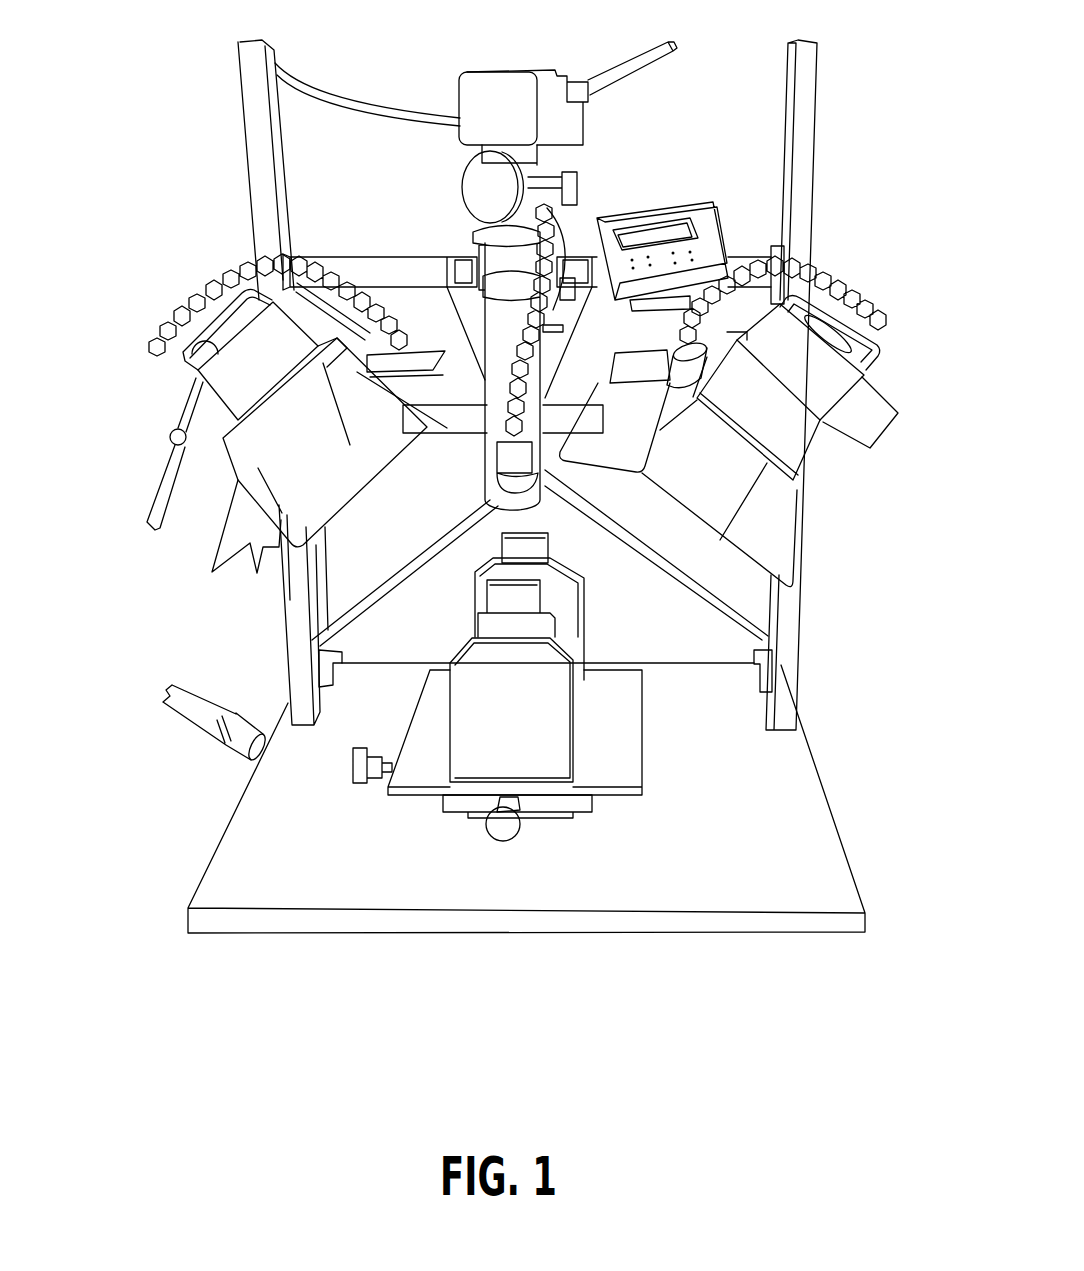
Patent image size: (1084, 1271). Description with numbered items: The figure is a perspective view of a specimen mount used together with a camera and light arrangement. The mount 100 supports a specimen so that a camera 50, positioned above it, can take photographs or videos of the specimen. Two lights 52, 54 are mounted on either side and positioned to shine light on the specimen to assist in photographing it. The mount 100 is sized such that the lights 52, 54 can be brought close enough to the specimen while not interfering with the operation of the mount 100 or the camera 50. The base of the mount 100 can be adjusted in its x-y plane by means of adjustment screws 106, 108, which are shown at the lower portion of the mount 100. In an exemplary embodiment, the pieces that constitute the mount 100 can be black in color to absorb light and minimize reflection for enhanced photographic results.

The camera 50 is at (490, 307).
The light 52 is at (192, 372).
The light 54 is at (832, 342).
The mount 100 is at (425, 723).
The adjustment screw 106 is at (352, 773).
The adjustment screw 108 is at (505, 823).